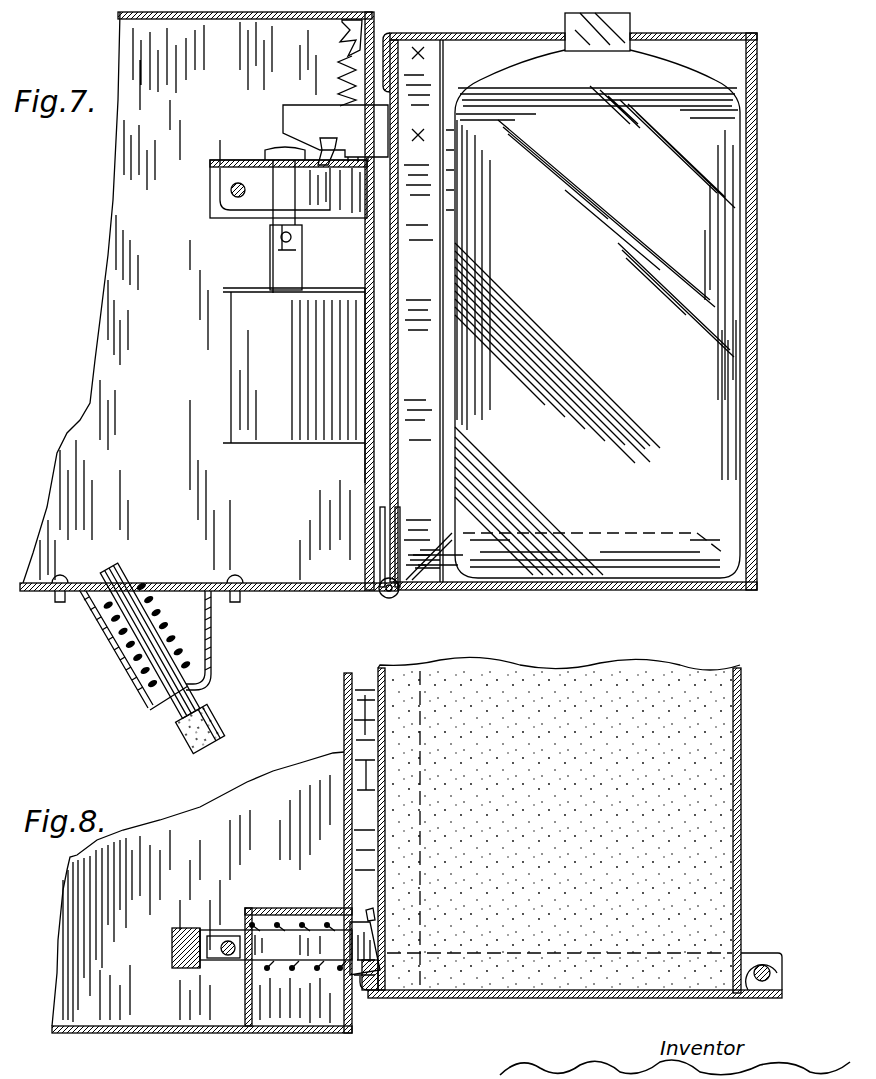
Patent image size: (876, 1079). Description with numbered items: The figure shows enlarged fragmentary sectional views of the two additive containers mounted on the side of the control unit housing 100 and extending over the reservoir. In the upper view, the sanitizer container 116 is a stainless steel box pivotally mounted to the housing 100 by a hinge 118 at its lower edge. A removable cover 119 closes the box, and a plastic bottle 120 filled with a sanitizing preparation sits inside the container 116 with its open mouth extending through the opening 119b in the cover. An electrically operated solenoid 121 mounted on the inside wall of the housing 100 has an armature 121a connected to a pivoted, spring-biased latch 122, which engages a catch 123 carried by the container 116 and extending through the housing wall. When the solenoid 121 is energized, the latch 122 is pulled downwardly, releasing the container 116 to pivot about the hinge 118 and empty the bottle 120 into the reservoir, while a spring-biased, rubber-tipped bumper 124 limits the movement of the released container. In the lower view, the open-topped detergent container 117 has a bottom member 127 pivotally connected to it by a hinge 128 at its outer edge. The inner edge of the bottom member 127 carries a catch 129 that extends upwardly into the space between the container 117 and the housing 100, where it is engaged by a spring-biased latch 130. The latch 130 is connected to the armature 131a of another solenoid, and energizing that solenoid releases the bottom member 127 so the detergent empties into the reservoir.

In FIG. 7, the control unit housing 100 is at (312, 592).
In FIG. 8, the control unit housing 100 is at (162, 1034).
In FIG. 7, the container 116 is at (680, 588).
In FIG. 8, the additive container 117 is at (738, 878).
In FIG. 7, the hinge 118 is at (396, 600).
In FIG. 7, the removable cover 119 is at (425, 34).
In FIG. 7, the opening 119b is at (568, 27).
In FIG. 7, the bottle 120 is at (458, 97).
In FIG. 7, the solenoid 121 is at (250, 390).
In FIG. 7, the armature 121a is at (272, 267).
In FIG. 7, the latch 122 is at (250, 172).
In FIG. 7, the catch 123 is at (294, 112).
In FIG. 7, the bumper 124 is at (186, 712).
In FIG. 8, the bottom member 127 is at (556, 998).
In FIG. 8, the hinge 128 is at (764, 966).
In FIG. 8, the catch 129 is at (380, 918).
In FIG. 8, the latch 130 is at (287, 934).
In FIG. 8, the armature 131a is at (188, 928).